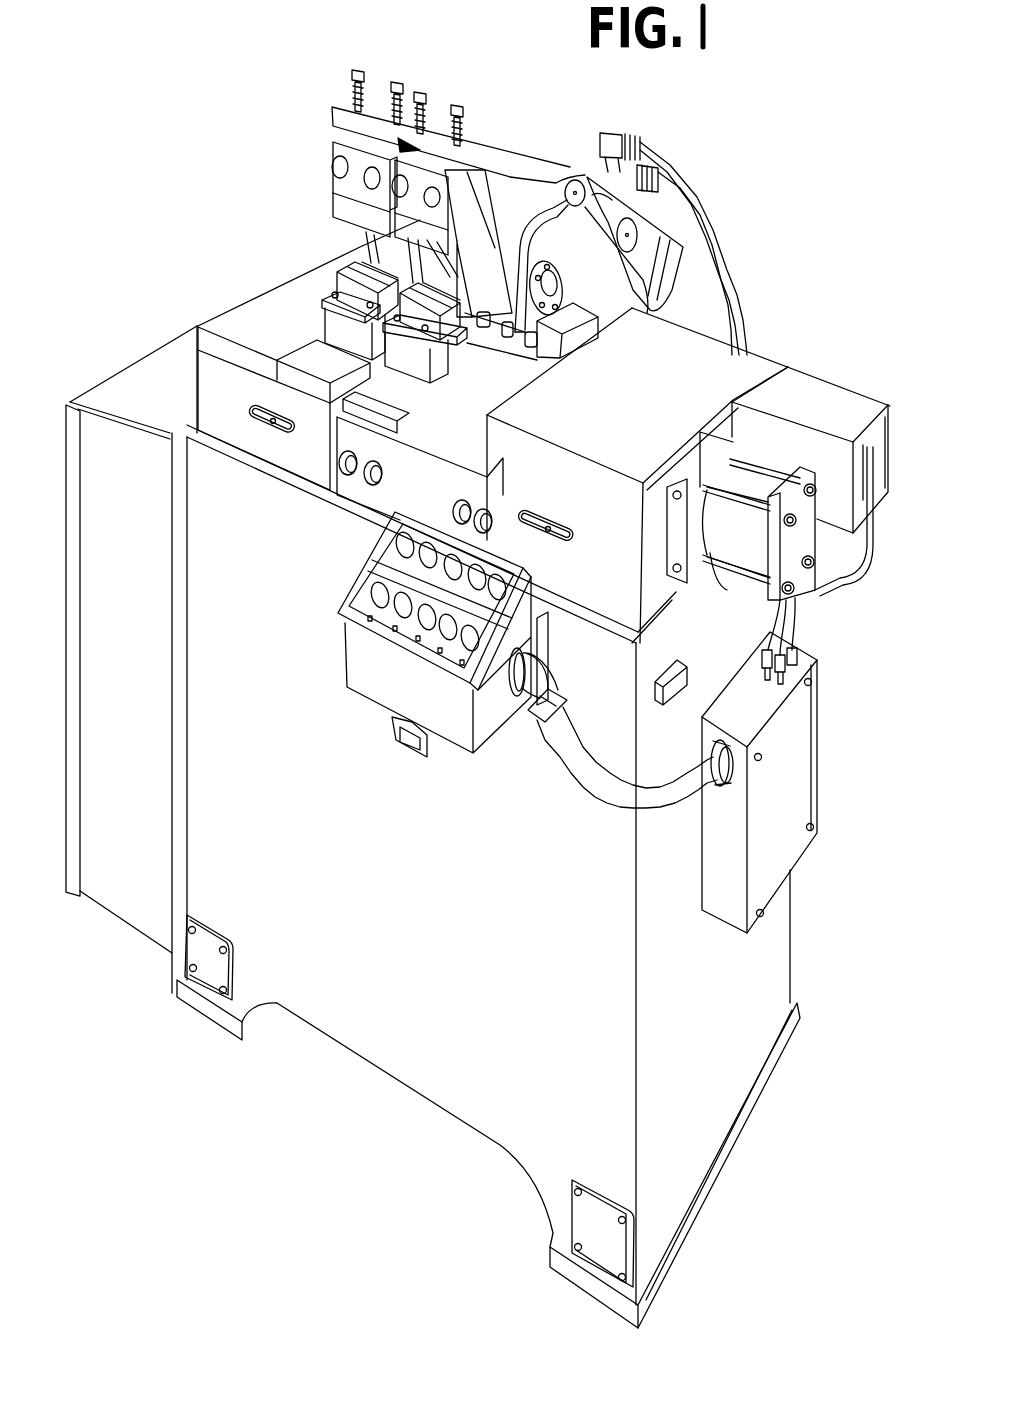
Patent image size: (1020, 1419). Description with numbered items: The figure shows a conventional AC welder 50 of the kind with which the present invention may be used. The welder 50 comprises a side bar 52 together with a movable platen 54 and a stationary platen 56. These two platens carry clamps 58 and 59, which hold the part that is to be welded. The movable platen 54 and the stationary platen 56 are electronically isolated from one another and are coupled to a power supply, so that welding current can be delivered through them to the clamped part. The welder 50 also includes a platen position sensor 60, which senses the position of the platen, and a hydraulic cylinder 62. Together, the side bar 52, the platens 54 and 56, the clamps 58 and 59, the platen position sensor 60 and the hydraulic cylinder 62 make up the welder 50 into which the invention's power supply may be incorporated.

The AC welder 50 is at (742, 1157).
The side bar 52 is at (343, 437).
The movable platen 54 is at (500, 393).
The stationary platen 56 is at (285, 292).
The clamp 58 is at (338, 148).
The clamp 59 is at (470, 178).
The platen position sensor 60 is at (820, 380).
The hydraulic cylinder 62 is at (750, 560).